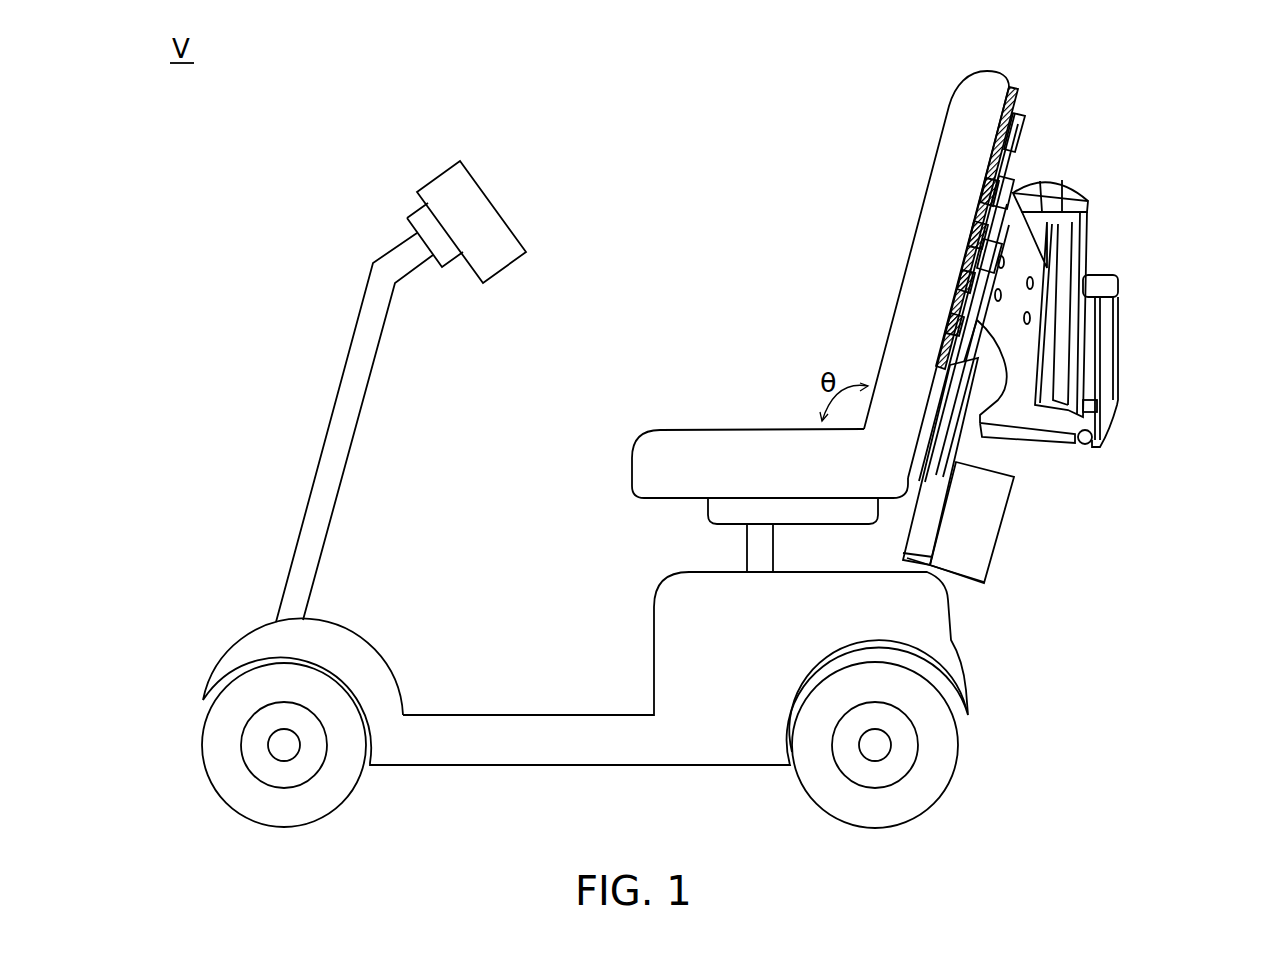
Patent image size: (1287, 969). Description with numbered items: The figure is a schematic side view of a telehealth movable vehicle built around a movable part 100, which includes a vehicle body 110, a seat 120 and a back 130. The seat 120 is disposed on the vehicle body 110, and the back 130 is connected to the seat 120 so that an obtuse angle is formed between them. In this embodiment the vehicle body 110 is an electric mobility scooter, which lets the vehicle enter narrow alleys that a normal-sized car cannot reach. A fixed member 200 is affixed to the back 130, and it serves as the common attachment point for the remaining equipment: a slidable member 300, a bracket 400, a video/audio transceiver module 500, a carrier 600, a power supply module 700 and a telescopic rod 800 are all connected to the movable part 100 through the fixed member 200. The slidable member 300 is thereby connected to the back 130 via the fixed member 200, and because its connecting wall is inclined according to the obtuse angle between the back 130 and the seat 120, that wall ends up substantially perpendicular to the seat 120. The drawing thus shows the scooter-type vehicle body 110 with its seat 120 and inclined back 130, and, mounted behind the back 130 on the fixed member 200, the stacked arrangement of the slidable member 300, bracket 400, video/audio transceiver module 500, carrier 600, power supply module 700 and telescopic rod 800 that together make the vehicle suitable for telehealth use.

The movable part 100 is at (406, 184).
The vehicle body 110 is at (345, 435).
The seat 120 is at (655, 468).
The back 130 is at (930, 273).
The fixed member 200 is at (1016, 97).
The slidable member 300 is at (977, 320).
The bracket 400 is at (1043, 223).
The video/audio transceiver module 500 is at (1094, 200).
The carrier 600 is at (1121, 360).
The power supply module 700 is at (1004, 554).
The telescopic rod 800 is at (970, 242).